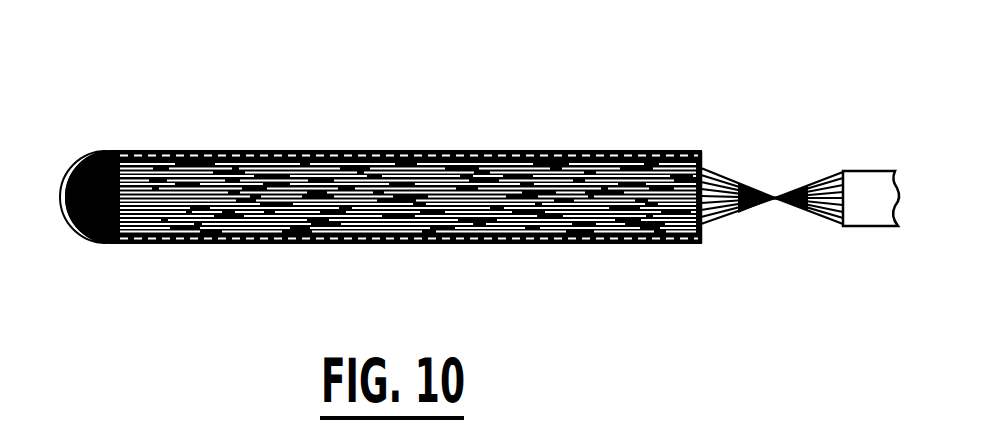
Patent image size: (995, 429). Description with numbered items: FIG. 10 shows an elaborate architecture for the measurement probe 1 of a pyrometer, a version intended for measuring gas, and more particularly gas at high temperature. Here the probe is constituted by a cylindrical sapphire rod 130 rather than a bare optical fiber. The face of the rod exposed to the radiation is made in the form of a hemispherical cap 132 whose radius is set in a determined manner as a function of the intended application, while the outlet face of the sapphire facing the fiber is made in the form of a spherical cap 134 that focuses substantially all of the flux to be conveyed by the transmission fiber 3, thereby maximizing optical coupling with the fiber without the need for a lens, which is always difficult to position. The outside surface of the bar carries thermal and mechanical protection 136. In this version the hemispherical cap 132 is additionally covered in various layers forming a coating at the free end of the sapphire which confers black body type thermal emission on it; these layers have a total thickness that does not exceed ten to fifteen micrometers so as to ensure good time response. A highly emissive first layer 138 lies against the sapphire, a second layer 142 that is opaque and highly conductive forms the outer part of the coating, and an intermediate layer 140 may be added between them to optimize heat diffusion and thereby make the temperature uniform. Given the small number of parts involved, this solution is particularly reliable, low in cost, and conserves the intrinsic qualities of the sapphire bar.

The measurement probe 1 is at (573, 128).
The transmission fiber 3 is at (864, 164).
The cylindrical sapphire rod 130 is at (243, 143).
The hemispherical cap 132 is at (88, 233).
The spherical cap 134 is at (703, 145).
The thermal and mechanical protection 136 is at (420, 143).
The first layer 138 is at (87, 141).
The intermediate layer 140 is at (91, 197).
The second layer 142 is at (94, 197).